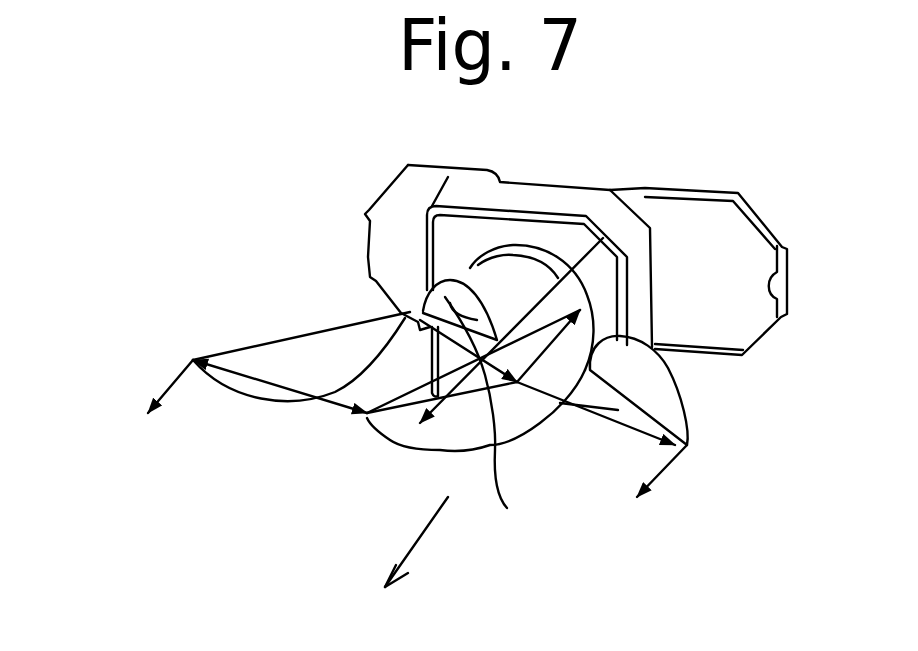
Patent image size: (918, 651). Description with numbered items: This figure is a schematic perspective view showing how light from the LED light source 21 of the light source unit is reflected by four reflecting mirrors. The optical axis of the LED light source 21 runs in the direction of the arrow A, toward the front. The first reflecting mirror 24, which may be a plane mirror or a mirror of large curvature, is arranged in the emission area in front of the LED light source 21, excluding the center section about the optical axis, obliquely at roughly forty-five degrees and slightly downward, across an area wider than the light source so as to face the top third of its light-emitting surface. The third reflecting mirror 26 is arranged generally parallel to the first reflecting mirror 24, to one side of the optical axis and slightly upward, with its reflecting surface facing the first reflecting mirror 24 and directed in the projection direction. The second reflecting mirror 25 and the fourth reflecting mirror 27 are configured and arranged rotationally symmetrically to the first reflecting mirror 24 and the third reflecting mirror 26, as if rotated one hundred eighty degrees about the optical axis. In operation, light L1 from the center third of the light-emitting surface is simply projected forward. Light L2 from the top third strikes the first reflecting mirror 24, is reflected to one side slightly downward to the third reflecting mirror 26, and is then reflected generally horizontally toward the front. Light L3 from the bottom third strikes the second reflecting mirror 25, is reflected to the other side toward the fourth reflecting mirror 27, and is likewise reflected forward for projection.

The LED light source 21 is at (570, 243).
The first reflecting mirror 24 is at (440, 293).
The second reflecting mirror 25 is at (453, 427).
The third reflecting mirror 26 is at (638, 380).
The fourth reflecting mirror 27 is at (300, 357).
The light L1 is at (521, 390).
The light L2 is at (647, 494).
The light L3 is at (241, 407).
The arrow A is at (404, 562).